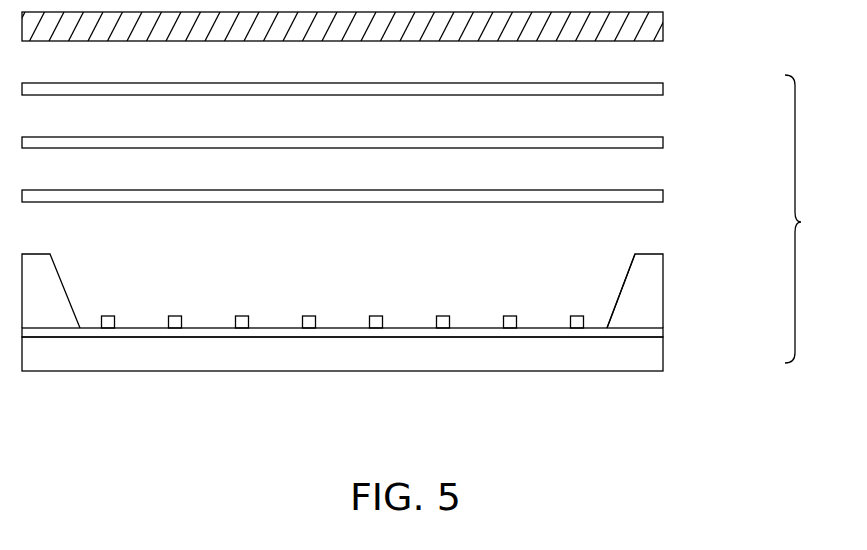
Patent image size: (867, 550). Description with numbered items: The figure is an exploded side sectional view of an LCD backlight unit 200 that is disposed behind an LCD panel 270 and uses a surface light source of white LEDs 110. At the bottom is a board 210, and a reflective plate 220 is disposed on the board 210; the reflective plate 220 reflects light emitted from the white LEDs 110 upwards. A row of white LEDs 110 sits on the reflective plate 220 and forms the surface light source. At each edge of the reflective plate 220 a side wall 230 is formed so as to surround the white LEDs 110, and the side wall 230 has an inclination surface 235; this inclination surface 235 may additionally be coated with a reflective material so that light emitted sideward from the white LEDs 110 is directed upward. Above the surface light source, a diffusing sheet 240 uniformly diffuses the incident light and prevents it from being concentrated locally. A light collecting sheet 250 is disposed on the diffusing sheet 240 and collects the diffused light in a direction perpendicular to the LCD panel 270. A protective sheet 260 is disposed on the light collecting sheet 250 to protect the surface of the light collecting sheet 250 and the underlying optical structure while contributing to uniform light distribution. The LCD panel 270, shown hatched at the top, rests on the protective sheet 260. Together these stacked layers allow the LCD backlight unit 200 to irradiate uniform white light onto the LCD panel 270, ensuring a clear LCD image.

The LCD panel 270 is at (665, 26).
The protective sheet 260 is at (665, 89).
The light collecting sheet 250 is at (665, 143).
The diffusing sheet 240 is at (665, 196).
The side wall 230 is at (665, 287).
The inclination surface 235 is at (618, 292).
The reflective plate 220 is at (665, 332).
The board 210 is at (665, 353).
The white LEDs 110 is at (444, 316).
The LCD backlight unit 200 is at (819, 219).